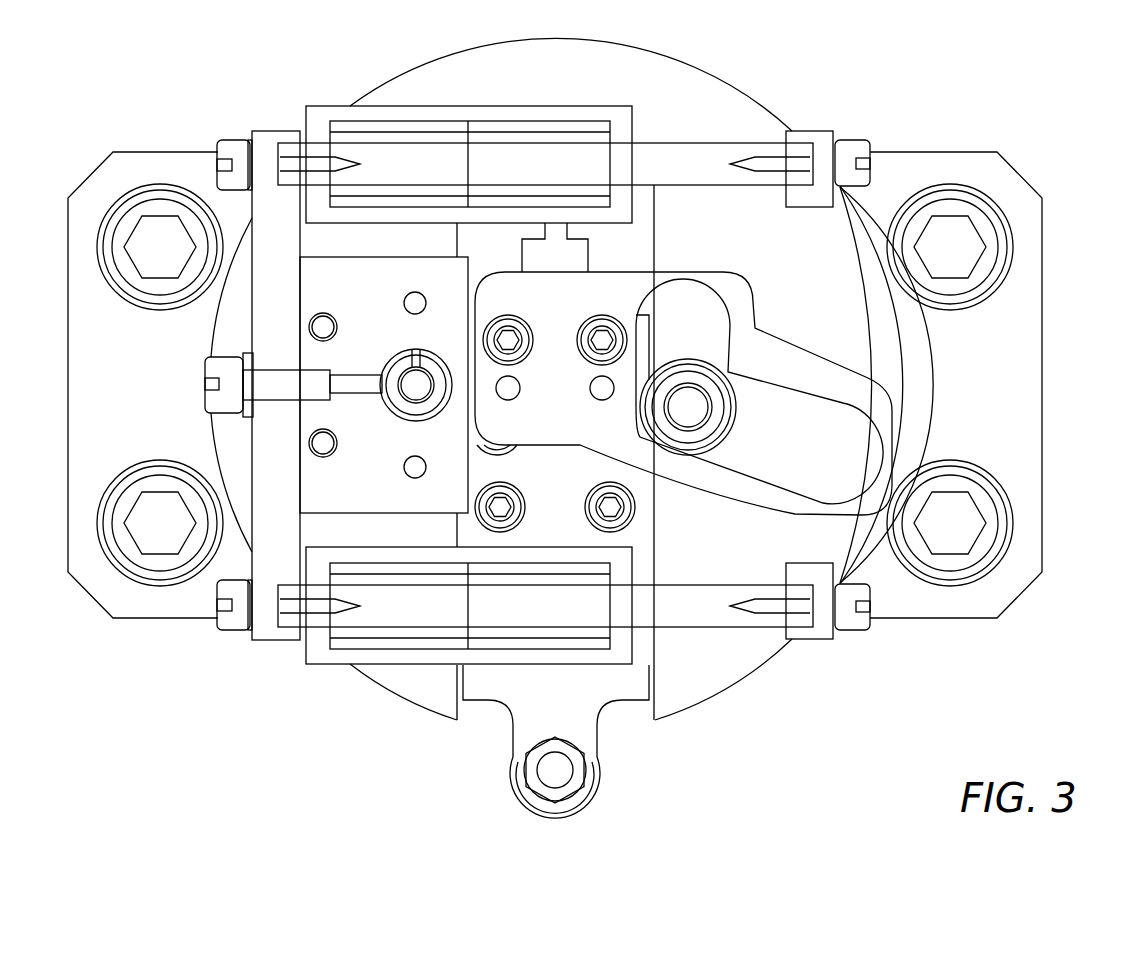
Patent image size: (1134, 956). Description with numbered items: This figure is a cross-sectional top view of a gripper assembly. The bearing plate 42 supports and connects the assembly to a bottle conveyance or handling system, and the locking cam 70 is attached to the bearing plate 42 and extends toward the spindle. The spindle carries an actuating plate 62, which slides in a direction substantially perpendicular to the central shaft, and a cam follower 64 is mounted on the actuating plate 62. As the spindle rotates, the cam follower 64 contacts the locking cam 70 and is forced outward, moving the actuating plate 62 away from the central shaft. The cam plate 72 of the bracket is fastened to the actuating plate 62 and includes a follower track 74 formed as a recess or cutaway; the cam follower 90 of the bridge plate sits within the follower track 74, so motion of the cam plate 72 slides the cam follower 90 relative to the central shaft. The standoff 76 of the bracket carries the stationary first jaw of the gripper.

The bearing plate 42 is at (1045, 342).
The actuating plate 62 is at (610, 733).
The cam follower 64 is at (565, 822).
The locking cam 70 is at (943, 388).
The cam plate 72 is at (805, 352).
The follower track 74 is at (690, 310).
The standoff 76 is at (383, 283).
The cam follower 90 is at (728, 440).